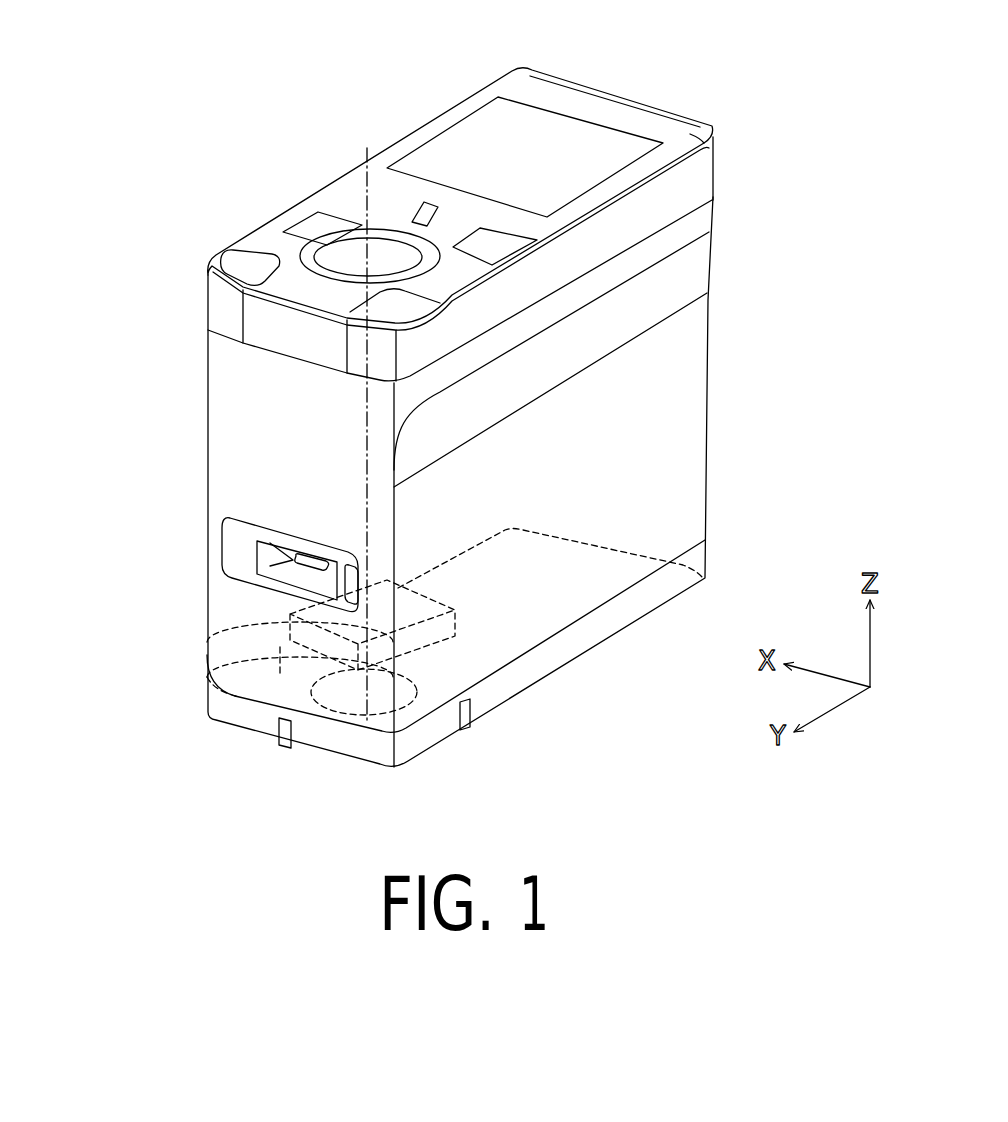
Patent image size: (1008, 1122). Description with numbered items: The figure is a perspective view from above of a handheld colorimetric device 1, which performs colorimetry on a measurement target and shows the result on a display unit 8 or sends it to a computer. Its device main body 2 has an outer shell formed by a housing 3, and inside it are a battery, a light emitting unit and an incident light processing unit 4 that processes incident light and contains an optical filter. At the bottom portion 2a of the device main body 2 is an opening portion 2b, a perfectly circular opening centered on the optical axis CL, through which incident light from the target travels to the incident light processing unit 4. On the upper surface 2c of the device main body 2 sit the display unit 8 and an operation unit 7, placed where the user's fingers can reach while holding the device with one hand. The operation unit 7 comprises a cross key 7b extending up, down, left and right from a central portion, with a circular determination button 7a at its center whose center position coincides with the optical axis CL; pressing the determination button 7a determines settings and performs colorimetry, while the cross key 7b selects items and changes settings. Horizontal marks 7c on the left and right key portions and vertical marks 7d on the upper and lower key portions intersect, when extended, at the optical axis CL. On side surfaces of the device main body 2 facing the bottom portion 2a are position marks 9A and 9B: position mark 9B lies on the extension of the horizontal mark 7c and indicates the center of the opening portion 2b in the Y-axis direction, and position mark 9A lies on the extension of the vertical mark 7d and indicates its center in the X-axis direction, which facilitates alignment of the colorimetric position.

The colorimetric device 1 is at (118, 156).
The device main body 2 is at (709, 333).
The bottom portion 2a is at (517, 620).
The opening portion 2b is at (320, 710).
The upper surface 2c is at (678, 127).
The housing 3 is at (710, 384).
The incident light processing unit 4 is at (290, 614).
The operation unit 7 is at (256, 220).
The determination button 7a is at (293, 234).
The cross key 7b is at (260, 244).
The horizontal marks 7c is at (305, 224).
The vertical marks 7d is at (308, 286).
The display unit 8 is at (537, 108).
The position mark 9A is at (275, 732).
The position mark 9B is at (470, 712).
The optical axis CL is at (370, 417).